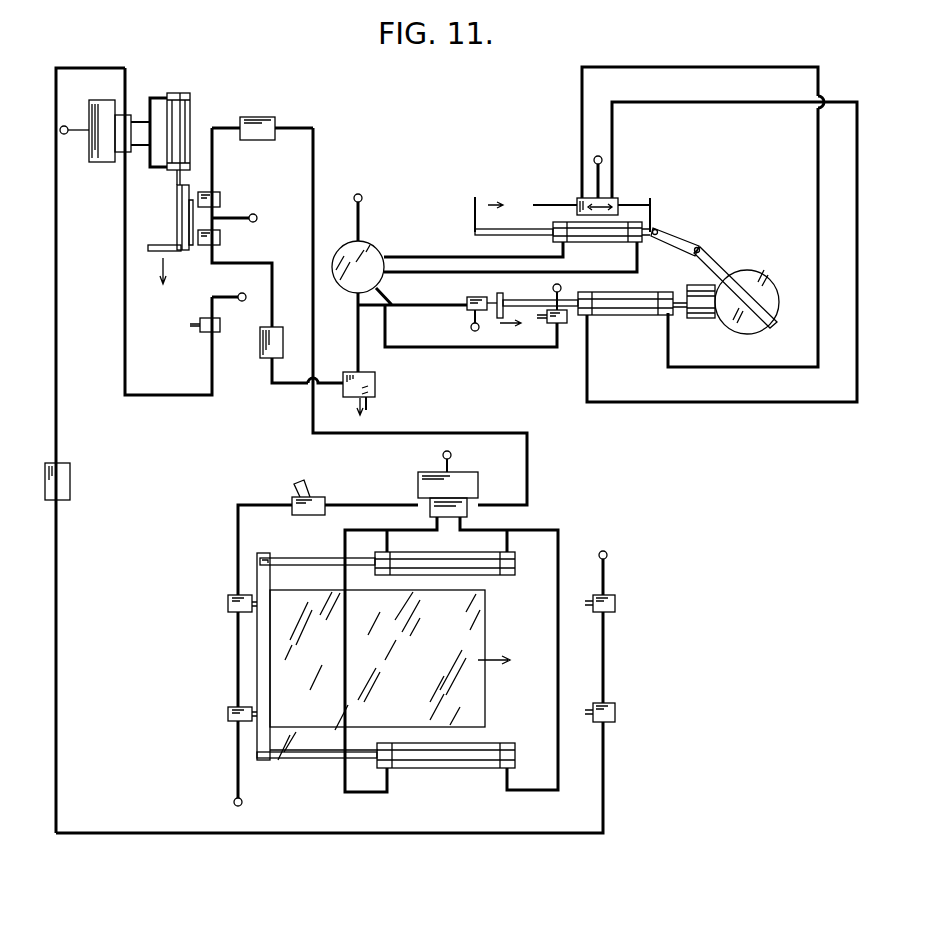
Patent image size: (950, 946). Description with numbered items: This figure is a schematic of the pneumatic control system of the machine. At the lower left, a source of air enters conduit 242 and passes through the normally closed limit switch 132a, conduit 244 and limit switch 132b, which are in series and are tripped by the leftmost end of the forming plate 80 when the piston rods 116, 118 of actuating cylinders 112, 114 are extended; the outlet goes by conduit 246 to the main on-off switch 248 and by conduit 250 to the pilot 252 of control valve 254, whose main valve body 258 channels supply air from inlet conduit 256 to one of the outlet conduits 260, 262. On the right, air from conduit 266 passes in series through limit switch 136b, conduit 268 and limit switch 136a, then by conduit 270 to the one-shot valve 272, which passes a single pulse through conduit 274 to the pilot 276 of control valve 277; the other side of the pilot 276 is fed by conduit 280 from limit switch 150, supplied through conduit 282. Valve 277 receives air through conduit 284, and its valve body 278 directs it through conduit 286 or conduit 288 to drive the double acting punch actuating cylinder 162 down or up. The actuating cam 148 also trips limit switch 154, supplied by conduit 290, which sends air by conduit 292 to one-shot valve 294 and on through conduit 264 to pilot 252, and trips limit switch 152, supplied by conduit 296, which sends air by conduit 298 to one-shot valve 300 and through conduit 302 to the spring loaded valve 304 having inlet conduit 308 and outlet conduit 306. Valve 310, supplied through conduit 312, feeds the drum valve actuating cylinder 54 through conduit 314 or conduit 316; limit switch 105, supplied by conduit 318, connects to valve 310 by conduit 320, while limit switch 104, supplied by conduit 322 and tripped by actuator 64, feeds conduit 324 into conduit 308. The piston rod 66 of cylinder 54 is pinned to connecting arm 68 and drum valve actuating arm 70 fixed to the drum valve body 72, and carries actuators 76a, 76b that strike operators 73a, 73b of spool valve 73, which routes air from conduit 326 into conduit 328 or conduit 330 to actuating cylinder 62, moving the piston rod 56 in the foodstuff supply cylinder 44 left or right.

The conduit 274 is at (54, 240).
The conduit 270 is at (64, 672).
The one-shot valve 272 is at (72, 482).
The conduit 280 is at (124, 312).
The conduit 282 is at (232, 282).
The limit switch 150 is at (206, 326).
The conduit 284 is at (82, 135).
The control valve 277 is at (92, 160).
The valve body 278 is at (106, 152).
The pilot 276 is at (123, 115).
The conduit 288 is at (150, 167).
The conduit 286 is at (160, 98).
The punch actuating cylinder 162 is at (183, 98).
The actuating cam 148 is at (186, 252).
The conduit 292 is at (214, 122).
The one-shot valve 294 is at (258, 117).
The conduit 264 is at (313, 128).
The limit switch 154 is at (218, 190).
The conduit 290 is at (216, 210).
The conduit 296 is at (216, 226).
The limit switch 152 is at (220, 242).
The conduit 298 is at (277, 293).
The one-shot valve 300 is at (265, 356).
The conduit 302 is at (282, 386).
The inlet conduit 308 is at (356, 356).
The spring loaded valve 304 is at (376, 388).
The outlet conduit 306 is at (372, 404).
The conduit 312 is at (362, 212).
The valve 310 is at (358, 267).
The conduit 314 is at (425, 256).
The conduit 316 is at (430, 274).
The conduit 324 is at (428, 308).
The conduit 320 is at (416, 352).
The limit switch 104 is at (470, 296).
The conduit 322 is at (482, 320).
The actuator 64 is at (500, 293).
The piston rod 56 is at (520, 300).
The conduit 318 is at (572, 282).
The limit switch 105 is at (550, 322).
The left spool valve actuator 76a is at (470, 200).
The piston rod 66 is at (494, 236).
The left spool valve operator 73a is at (540, 203).
The spool valve 73 is at (612, 196).
The right spool valve operator 73b is at (636, 203).
The right spool valve actuator 76b is at (652, 212).
The conduit 326 is at (600, 170).
The conduit 328 is at (685, 67).
The conduit 330 is at (718, 102).
The drum valve actuating cylinder 54 is at (612, 252).
The connecting arm 68 is at (686, 240).
The drum valve actuating arm 70 is at (722, 254).
The drum valve body 72 is at (756, 277).
The foodstuff supply cylinder 44 is at (700, 318).
The actuating cylinder 62 is at (616, 316).
The inlet conduit 256 is at (442, 458).
The main valve body 258 is at (478, 478).
The control valve 254 is at (405, 484).
The pilot 252 is at (467, 510).
The main on-off switch 248 is at (296, 495).
The conduit 250 is at (338, 503).
The conduit 246 is at (236, 525).
The outlet conduit 262 is at (410, 530).
The outlet conduit 260 is at (484, 526).
The actuating cylinder 114 is at (507, 582).
The piston rod 118 is at (312, 558).
The forming plate 80 is at (478, 640).
The piston rod 116 is at (294, 768).
The actuating cylinder 112 is at (450, 768).
The limit switch 132b is at (226, 602).
The conduit 244 is at (236, 656).
The limit switch 132a is at (226, 716).
The conduit 242 is at (234, 764).
The conduit 266 is at (608, 575).
The limit switch 136b is at (612, 603).
The conduit 268 is at (606, 672).
The limit switch 136a is at (616, 713).